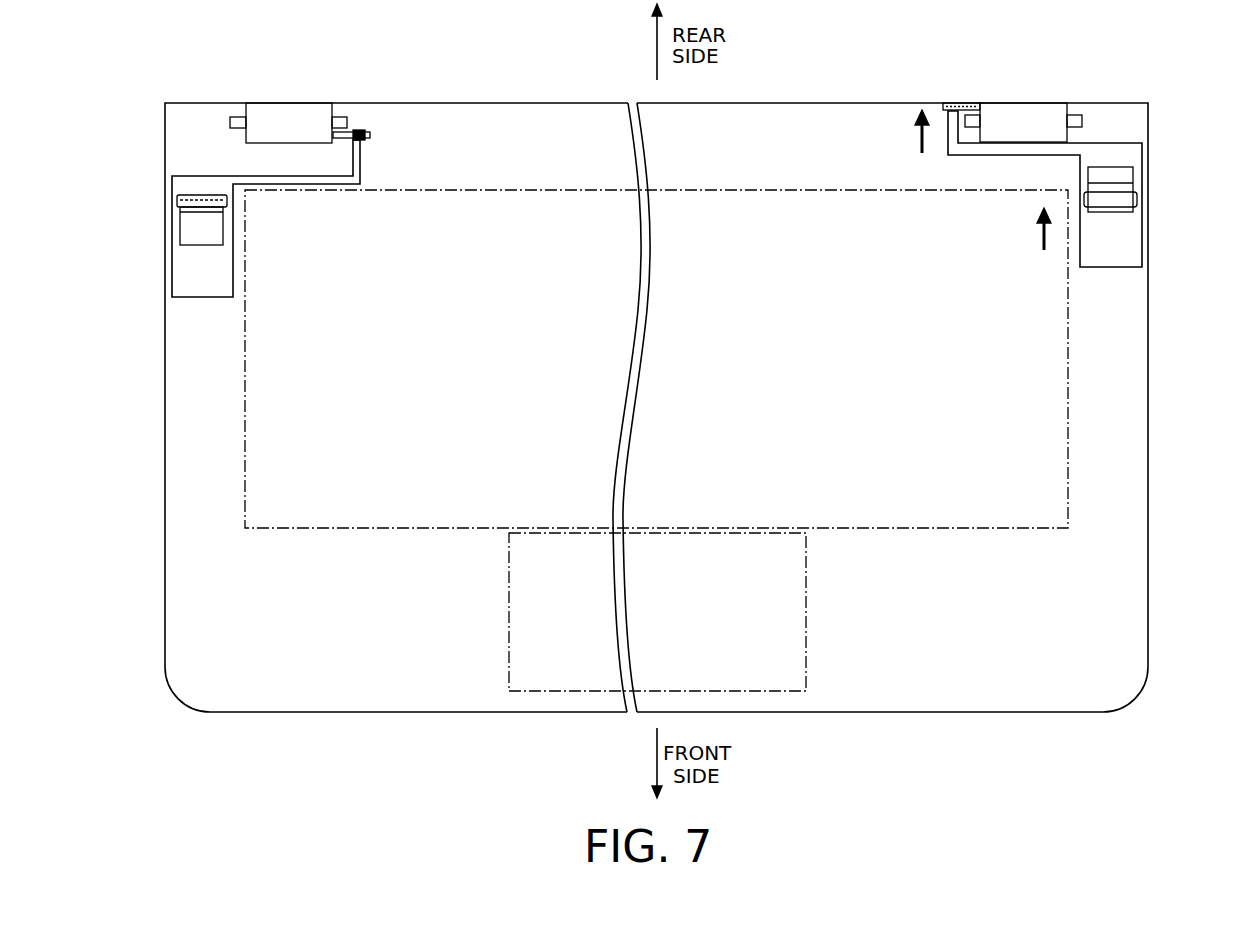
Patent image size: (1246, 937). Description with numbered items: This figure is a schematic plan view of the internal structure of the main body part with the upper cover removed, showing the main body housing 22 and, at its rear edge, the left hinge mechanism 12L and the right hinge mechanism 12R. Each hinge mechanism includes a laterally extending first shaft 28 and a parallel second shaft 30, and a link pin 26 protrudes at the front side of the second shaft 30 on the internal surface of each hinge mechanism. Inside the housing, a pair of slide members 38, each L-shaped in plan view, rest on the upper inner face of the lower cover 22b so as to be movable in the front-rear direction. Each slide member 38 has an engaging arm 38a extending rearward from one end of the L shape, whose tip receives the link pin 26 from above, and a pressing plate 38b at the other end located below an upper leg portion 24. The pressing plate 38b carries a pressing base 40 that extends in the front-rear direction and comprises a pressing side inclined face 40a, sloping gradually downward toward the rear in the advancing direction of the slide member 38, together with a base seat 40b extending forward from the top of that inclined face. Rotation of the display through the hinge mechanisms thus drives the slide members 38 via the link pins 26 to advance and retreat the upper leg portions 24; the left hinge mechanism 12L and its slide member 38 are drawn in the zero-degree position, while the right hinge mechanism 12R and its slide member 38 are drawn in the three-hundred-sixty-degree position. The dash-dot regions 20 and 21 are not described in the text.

The left hinge mechanism 12L is at (293, 116).
The right hinge mechanism 12R is at (1012, 114).
The display region 20 is at (888, 530).
The touch pad region 21 is at (782, 691).
The main body housing 22 is at (307, 720).
The lower cover 22b is at (932, 691).
The upper leg portion 24 is at (203, 195).
The link pin 26 is at (370, 134).
The first shaft 28 is at (240, 116).
The second shaft 30 is at (1076, 114).
The slide member 38 is at (655, 205).
The engaging arm 38a is at (358, 160).
The pressing plate 38b is at (223, 275).
The pressing base 40 is at (659, 221).
The pressing side inclined face 40a is at (200, 205).
The base seat 40b is at (187, 232).